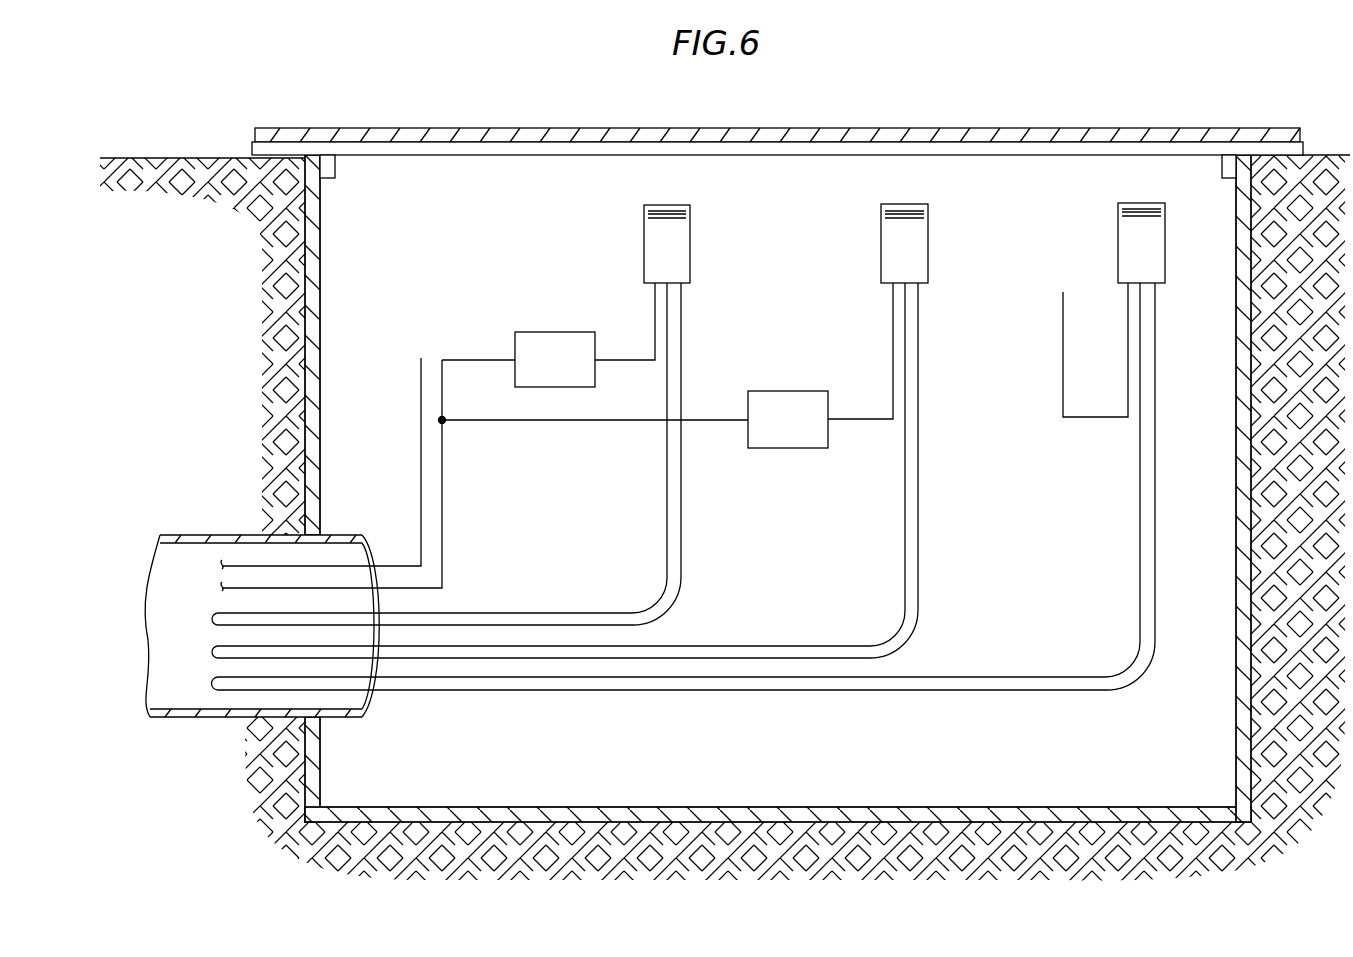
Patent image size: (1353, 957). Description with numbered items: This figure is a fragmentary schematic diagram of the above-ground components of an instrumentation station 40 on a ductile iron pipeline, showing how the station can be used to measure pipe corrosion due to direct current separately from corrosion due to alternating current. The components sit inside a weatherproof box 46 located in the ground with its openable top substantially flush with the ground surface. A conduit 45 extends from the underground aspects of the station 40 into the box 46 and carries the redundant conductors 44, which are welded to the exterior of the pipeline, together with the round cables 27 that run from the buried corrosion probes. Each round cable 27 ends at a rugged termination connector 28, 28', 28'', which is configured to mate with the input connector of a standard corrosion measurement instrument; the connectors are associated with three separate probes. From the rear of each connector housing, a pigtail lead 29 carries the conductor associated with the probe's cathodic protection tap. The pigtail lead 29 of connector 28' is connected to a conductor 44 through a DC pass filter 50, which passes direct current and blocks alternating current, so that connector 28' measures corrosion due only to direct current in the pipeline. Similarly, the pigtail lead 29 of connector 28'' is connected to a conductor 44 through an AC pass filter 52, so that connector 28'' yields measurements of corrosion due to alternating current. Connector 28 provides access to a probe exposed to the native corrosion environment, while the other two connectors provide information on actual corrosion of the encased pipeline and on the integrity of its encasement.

The instrumentation station 40 is at (1043, 105).
The weatherproof box 46 is at (483, 128).
The conduit 45 is at (372, 712).
The conductors 44 is at (442, 487).
The AC pass filter 52 is at (550, 331).
The DC pass filter 50 is at (785, 390).
The pigtail lead 29 is at (653, 305).
The round cable 27 is at (683, 305).
The termination connector 28 is at (1167, 243).
The termination connector 28' is at (933, 243).
The termination connector 28'' is at (697, 244).